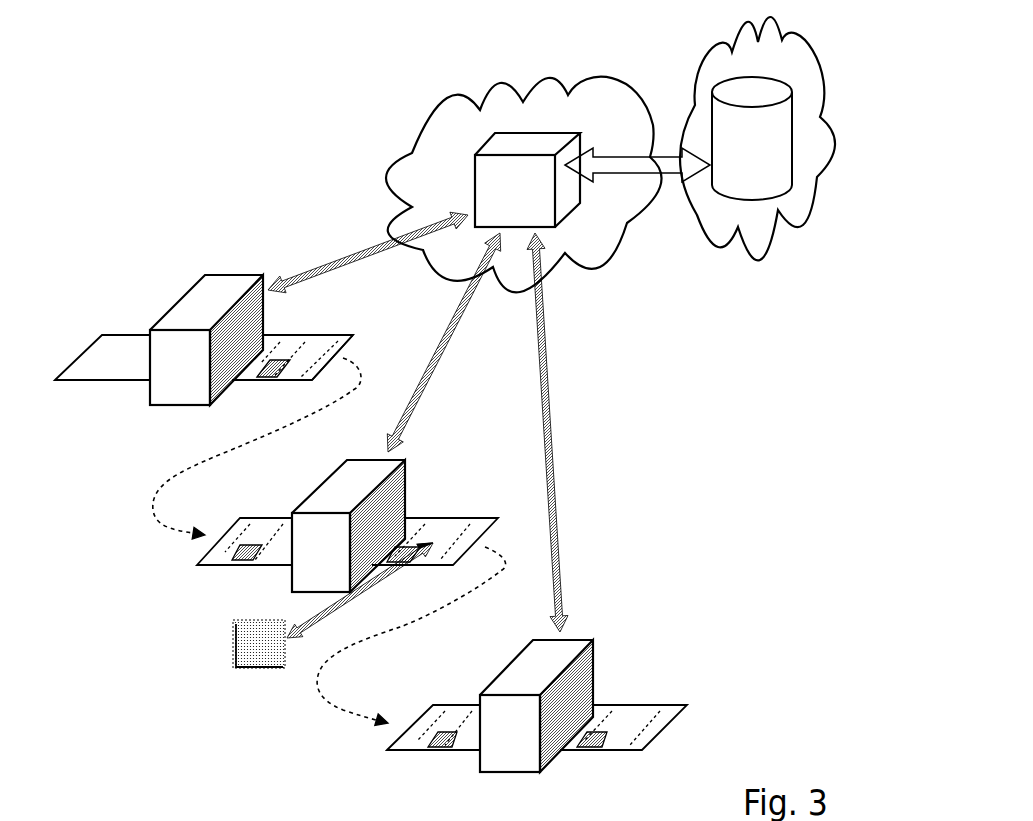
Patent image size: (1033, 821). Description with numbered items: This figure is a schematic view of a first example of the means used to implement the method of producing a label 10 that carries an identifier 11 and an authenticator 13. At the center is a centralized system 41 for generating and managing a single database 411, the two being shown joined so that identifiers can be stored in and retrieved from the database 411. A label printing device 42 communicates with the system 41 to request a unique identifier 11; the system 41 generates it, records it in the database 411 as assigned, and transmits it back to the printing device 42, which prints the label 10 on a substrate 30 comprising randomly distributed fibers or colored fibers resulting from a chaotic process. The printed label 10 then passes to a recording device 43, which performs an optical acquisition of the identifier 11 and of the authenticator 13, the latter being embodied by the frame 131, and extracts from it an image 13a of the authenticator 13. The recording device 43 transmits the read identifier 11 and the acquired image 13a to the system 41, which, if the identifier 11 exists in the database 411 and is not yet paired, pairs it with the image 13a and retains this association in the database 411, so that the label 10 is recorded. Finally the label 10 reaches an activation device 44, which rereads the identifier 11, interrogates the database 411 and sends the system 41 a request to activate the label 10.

The centralized system 41 is at (476, 132).
The single database 411 is at (738, 189).
The label printing device 42 is at (237, 275).
The recording device 43 is at (412, 462).
The activation device 44 is at (593, 641).
The label 10 is at (627, 692).
The identifier 11 is at (315, 335).
The authenticator 13 is at (490, 525).
The image of the authenticator 13a is at (243, 680).
The frame 131 is at (270, 376).
The substrate 30 is at (97, 368).